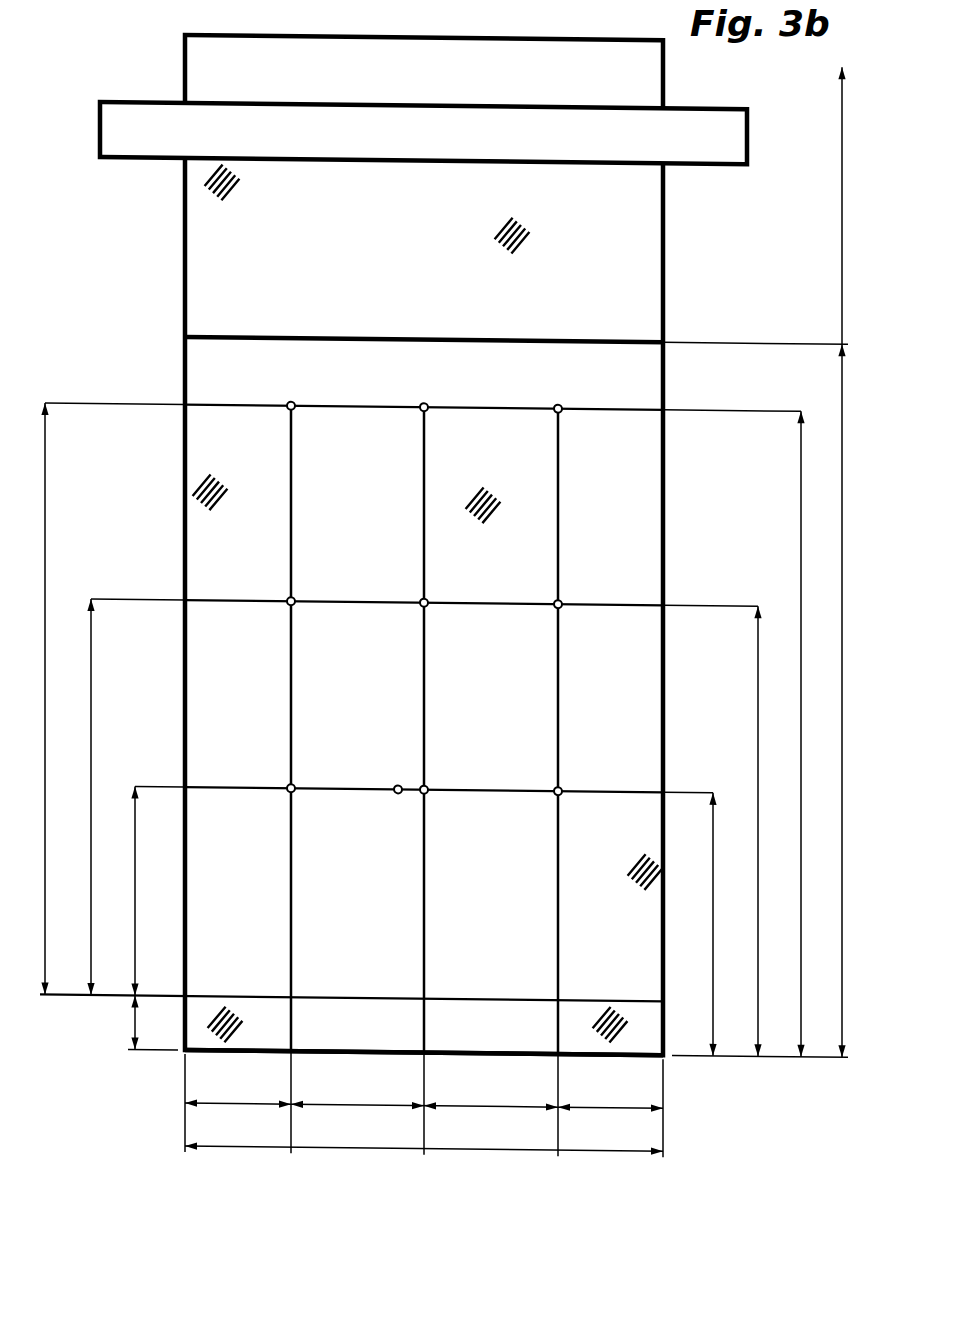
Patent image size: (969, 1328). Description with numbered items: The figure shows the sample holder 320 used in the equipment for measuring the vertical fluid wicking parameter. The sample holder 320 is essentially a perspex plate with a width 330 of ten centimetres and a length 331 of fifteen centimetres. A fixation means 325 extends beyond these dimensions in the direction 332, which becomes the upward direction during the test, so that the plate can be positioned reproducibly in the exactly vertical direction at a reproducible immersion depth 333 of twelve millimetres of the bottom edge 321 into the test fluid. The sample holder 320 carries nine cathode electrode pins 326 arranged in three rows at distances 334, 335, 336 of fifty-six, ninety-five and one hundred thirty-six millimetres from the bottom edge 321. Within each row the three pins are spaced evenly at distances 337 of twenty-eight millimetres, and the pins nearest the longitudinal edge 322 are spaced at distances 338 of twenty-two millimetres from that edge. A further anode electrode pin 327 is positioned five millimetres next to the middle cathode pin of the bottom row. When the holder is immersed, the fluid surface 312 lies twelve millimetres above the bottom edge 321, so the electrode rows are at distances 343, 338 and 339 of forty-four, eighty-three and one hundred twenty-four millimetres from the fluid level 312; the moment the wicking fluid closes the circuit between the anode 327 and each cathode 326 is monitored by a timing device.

The fluid surface 312 is at (228, 993).
The sample holder 320 is at (183, 76).
The bottom edge 321 is at (648, 1053).
The longitudinal edge 322 is at (183, 312).
The fixation means 325 is at (137, 141).
The cathode electrode pins 326 is at (421, 398).
The anode electrode pin 327 is at (396, 789).
The width 330 is at (424, 1164).
The length 331 is at (842, 729).
The direction 332 is at (841, 228).
The immersion depth 333 is at (132, 1021).
The distance 334 is at (712, 943).
The distance 335 is at (757, 787).
The distance 336 is at (800, 539).
The distance 337 is at (424, 1103).
The distance 338 is at (93, 703).
The distance 339 is at (47, 501).
The distance 343 is at (137, 901).